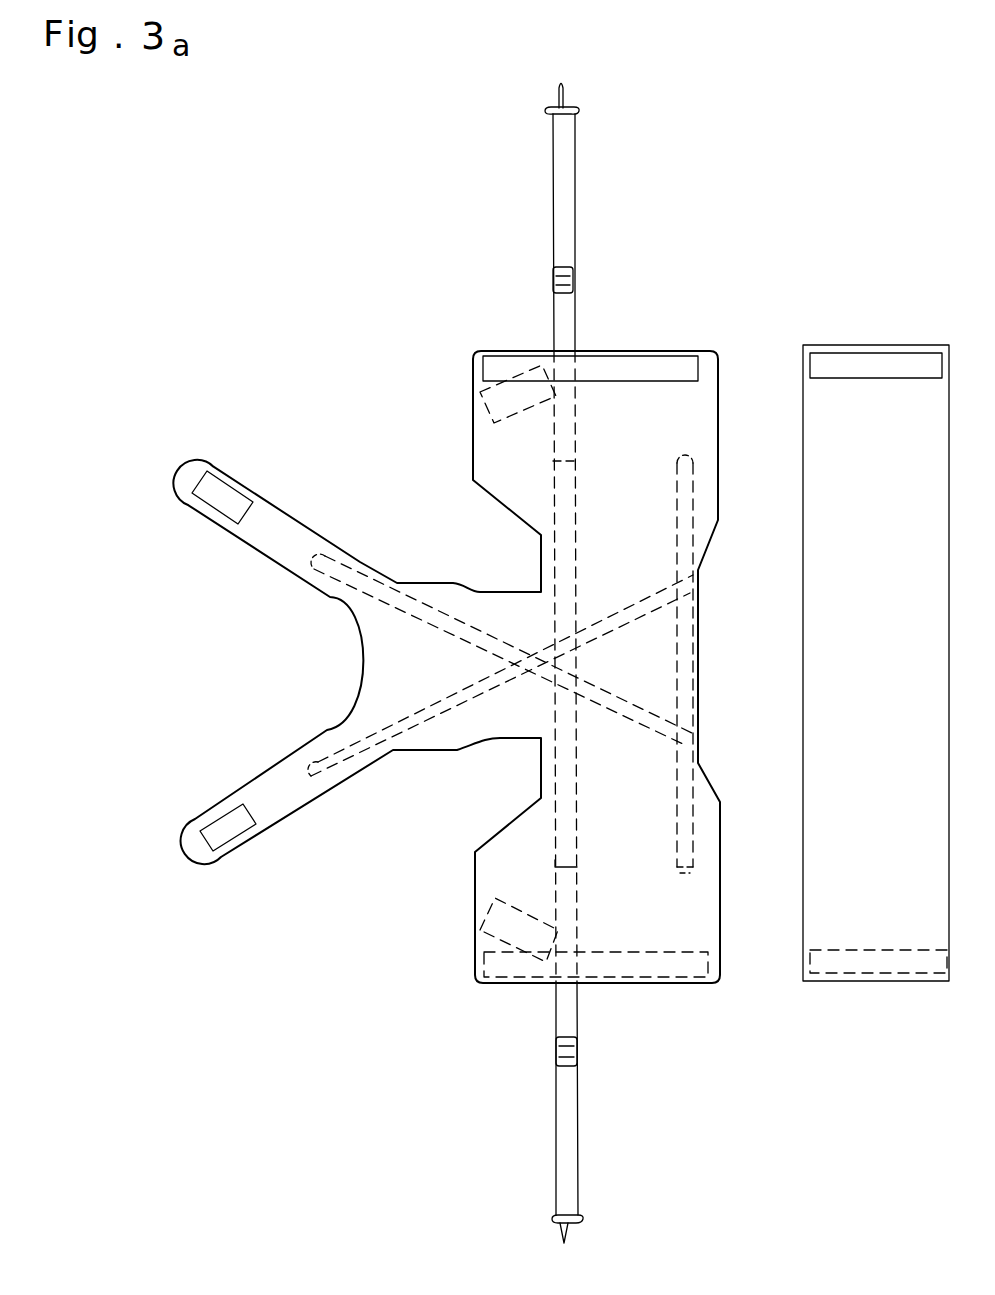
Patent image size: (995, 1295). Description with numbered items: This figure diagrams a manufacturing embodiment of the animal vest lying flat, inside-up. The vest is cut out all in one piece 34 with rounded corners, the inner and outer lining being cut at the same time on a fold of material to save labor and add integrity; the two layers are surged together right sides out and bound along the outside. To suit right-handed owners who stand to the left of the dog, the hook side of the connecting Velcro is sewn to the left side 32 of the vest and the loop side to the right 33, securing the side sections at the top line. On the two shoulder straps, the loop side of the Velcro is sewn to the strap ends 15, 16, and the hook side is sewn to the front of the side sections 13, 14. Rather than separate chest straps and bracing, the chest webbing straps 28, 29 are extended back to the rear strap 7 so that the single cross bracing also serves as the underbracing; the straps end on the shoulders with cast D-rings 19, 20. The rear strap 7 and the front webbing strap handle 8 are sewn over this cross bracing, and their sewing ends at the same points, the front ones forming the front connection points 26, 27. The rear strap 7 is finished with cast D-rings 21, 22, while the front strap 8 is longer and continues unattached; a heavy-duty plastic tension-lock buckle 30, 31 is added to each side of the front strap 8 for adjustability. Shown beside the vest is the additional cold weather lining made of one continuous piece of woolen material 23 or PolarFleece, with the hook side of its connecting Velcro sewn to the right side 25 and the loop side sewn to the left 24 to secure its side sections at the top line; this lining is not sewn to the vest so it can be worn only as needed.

The rear strap 7 is at (686, 665).
The front webbing strap handle 8 is at (564, 664).
The hook side of Velcro on front of side section 13 is at (519, 930).
The hook side of Velcro on front of side section 14 is at (518, 394).
The loop side of Velcro on shoulder strap end 15 is at (228, 827).
The loop side of Velcro on shoulder strap end 16 is at (222, 497).
The cast D-ring 19 is at (320, 786).
The cast D-ring 20 is at (326, 560).
The cast D-ring 21 is at (704, 871).
The cast D-ring 22 is at (702, 459).
The woolen material 23 is at (876, 663).
The loop side of Velcro 24 is at (878, 963).
The hook side of Velcro 25 is at (876, 367).
The front connection point 26 is at (584, 873).
The front connection point 27 is at (580, 462).
The chest webbing strap 28 is at (502, 675).
The chest webbing strap 29 is at (503, 650).
The tension-lock buckle 30 is at (582, 1052).
The tension-lock buckle 31 is at (579, 282).
The hook side of connecting Velcro 32 is at (596, 967).
The loop side of connecting Velcro 33 is at (590, 370).
The one-piece vest 34 is at (446, 667).